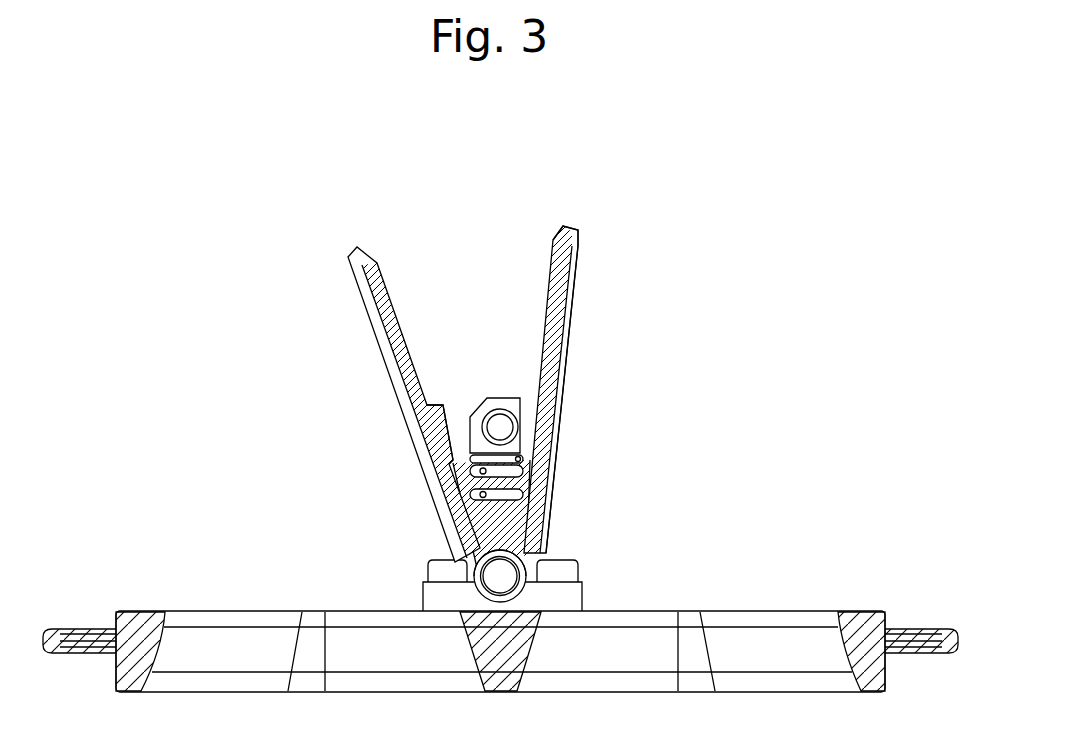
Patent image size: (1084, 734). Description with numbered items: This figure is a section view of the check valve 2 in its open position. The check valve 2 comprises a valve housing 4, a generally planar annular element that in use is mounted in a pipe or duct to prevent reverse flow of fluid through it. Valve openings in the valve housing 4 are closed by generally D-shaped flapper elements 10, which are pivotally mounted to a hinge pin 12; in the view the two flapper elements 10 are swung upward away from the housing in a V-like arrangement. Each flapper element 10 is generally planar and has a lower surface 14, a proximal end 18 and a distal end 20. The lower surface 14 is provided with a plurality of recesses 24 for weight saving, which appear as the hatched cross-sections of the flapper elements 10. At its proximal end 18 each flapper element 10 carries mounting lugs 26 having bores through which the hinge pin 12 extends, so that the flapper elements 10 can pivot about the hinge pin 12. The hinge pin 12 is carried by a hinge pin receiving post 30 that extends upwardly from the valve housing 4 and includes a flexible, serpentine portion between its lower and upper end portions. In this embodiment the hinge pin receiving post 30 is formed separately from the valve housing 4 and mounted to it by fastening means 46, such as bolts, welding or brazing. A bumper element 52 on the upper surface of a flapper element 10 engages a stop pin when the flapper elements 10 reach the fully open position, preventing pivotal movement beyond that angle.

The check valve 2 is at (195, 188).
The valve housing 4 is at (864, 610).
The flapper element 10 is at (577, 257).
The hinge pin 12 is at (503, 566).
The lower surface 14 is at (567, 340).
The proximal end 18 is at (545, 552).
The distal end 20 is at (572, 222).
The recess 24 is at (380, 328).
The mounting lug 26 is at (470, 526).
The hinge pin receiving post 30 is at (470, 457).
The fastening means 46 is at (432, 570).
The bumper element 52 is at (443, 406).